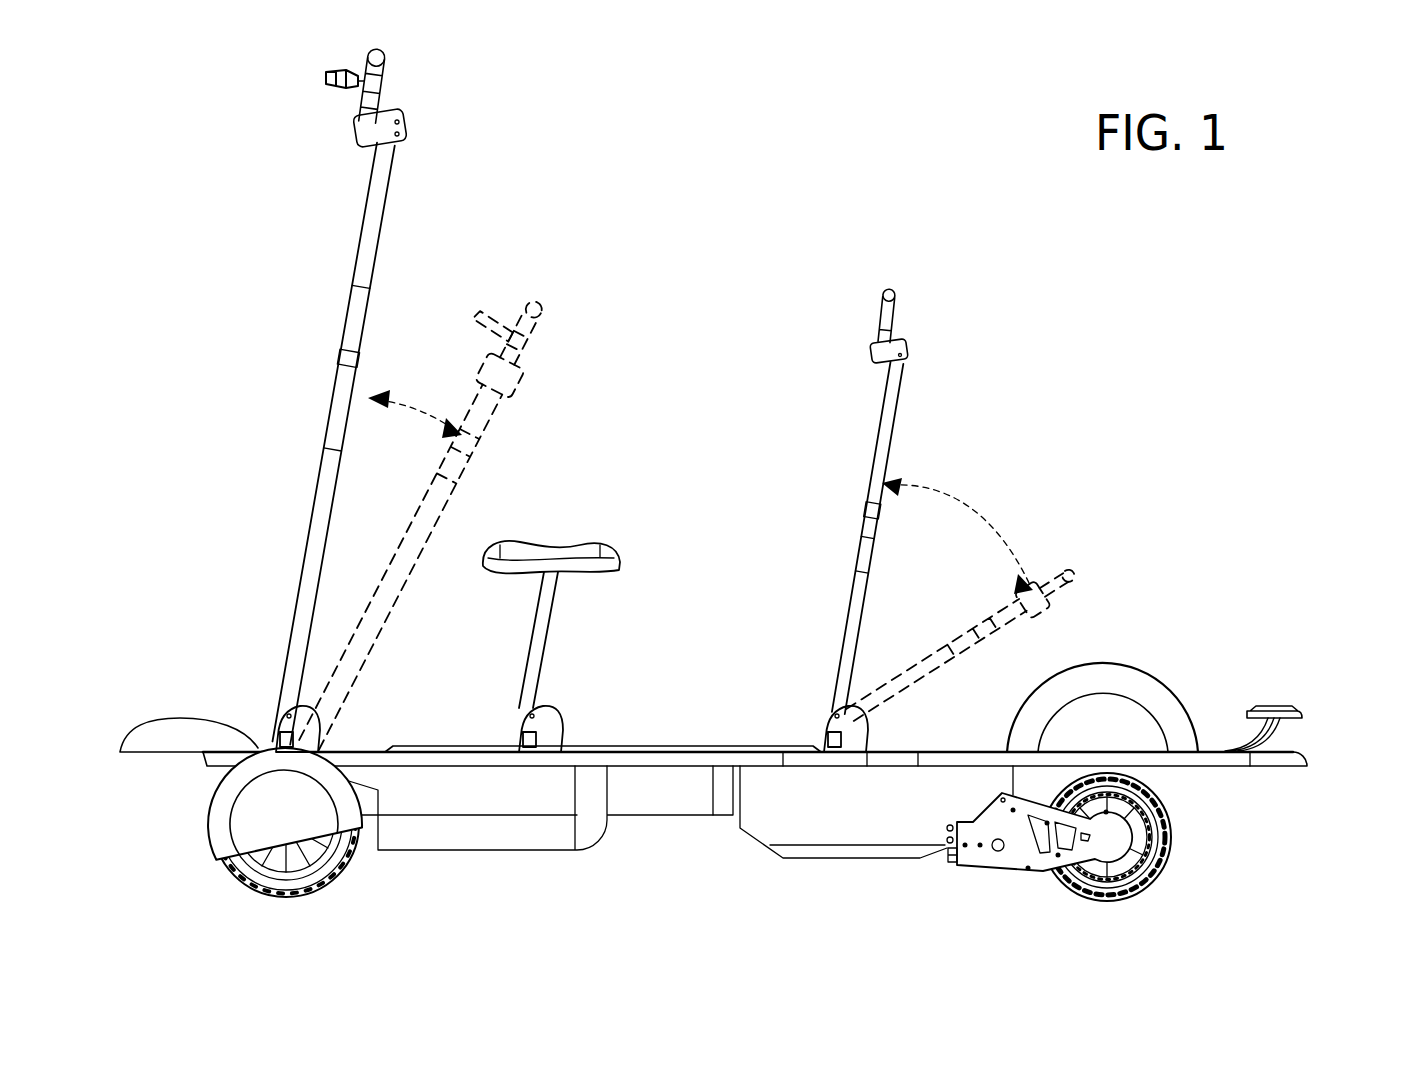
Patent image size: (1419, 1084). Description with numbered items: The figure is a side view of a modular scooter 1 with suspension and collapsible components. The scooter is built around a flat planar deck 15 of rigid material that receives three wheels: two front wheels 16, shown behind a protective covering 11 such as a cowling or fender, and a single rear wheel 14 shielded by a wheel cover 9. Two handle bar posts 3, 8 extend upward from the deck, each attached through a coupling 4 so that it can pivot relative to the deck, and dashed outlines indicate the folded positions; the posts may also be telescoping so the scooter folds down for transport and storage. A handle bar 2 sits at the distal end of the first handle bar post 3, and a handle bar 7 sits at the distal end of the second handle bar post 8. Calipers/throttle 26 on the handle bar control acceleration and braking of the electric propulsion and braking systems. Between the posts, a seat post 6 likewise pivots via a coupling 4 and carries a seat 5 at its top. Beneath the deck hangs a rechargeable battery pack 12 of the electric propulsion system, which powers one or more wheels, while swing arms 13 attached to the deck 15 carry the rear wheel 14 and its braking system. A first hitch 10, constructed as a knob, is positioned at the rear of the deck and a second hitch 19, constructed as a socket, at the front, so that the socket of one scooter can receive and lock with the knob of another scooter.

The modular scooter 1 is at (700, 200).
The handle bar 2 is at (390, 60).
The calipers/throttle 26 is at (326, 75).
The handle bar post 3 is at (390, 218).
The coupling 4 is at (320, 715).
The seat 5 is at (622, 570).
The seat post 6 is at (552, 637).
The handle bar 7 is at (895, 323).
The handle bar post 8 is at (892, 433).
The wheel cover 9 is at (1160, 682).
The first hitch 10 is at (1302, 715).
The protective covering 11 is at (208, 830).
The rechargeable battery pack 12 is at (518, 852).
The swing arm 13 is at (997, 872).
The rear wheel 14 is at (1172, 835).
The deck 15 is at (683, 750).
The front wheel 16 is at (283, 898).
The second hitch 19 is at (185, 718).